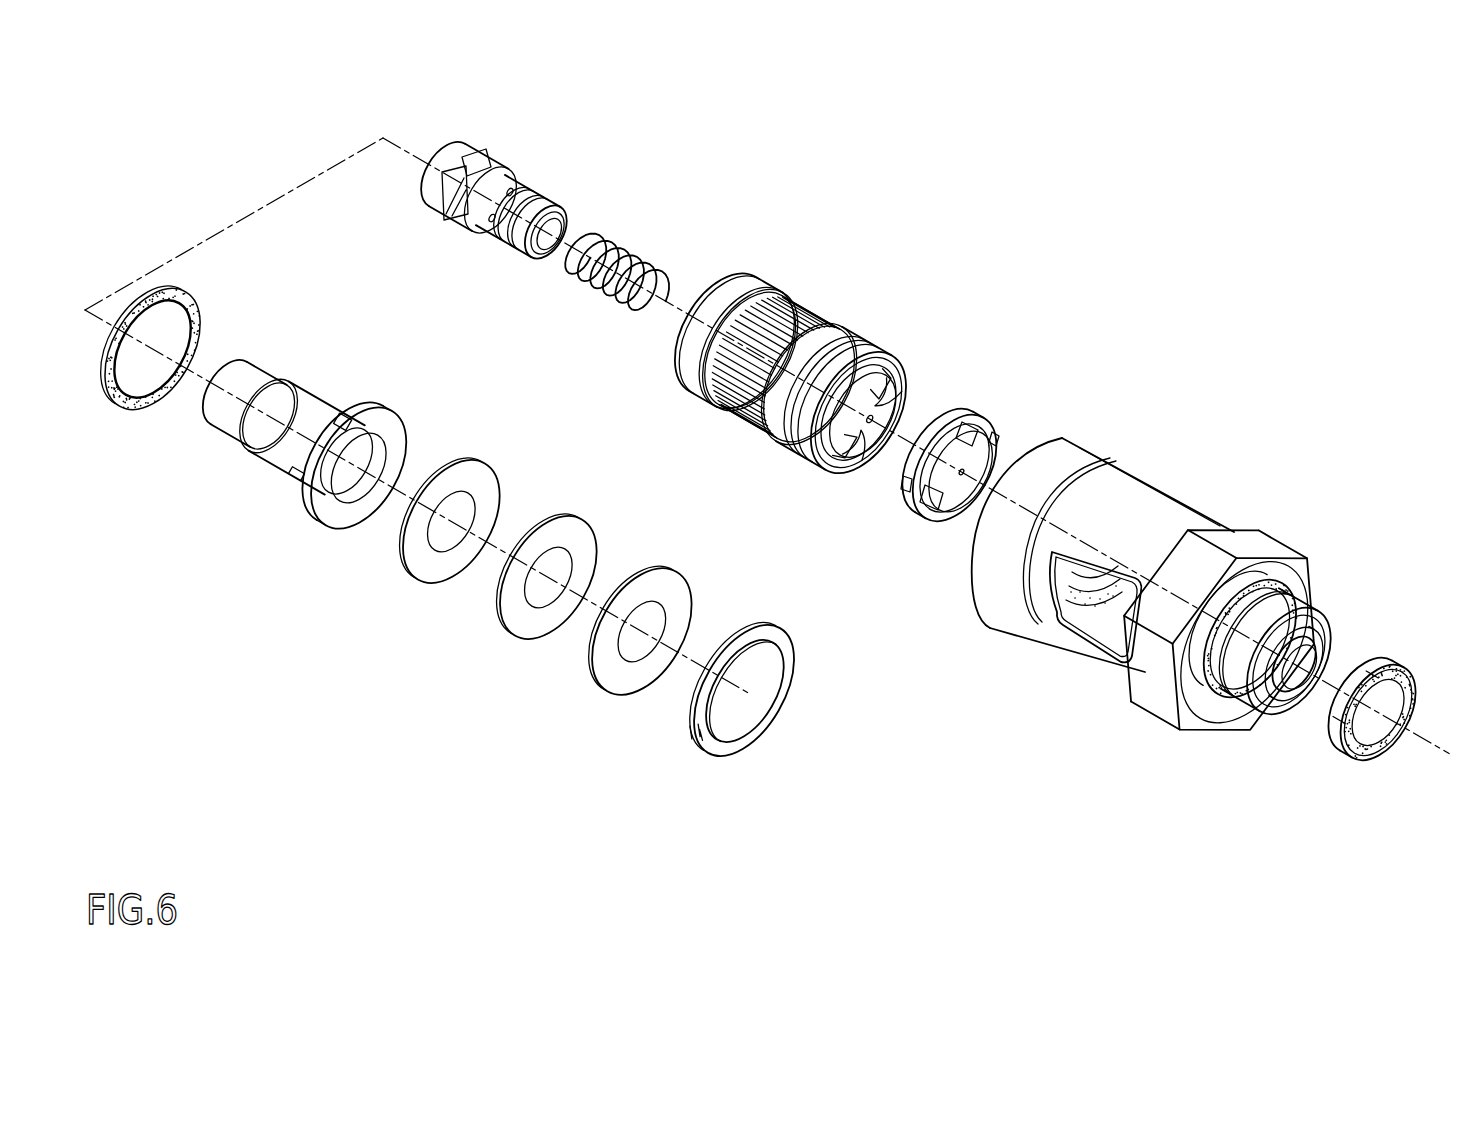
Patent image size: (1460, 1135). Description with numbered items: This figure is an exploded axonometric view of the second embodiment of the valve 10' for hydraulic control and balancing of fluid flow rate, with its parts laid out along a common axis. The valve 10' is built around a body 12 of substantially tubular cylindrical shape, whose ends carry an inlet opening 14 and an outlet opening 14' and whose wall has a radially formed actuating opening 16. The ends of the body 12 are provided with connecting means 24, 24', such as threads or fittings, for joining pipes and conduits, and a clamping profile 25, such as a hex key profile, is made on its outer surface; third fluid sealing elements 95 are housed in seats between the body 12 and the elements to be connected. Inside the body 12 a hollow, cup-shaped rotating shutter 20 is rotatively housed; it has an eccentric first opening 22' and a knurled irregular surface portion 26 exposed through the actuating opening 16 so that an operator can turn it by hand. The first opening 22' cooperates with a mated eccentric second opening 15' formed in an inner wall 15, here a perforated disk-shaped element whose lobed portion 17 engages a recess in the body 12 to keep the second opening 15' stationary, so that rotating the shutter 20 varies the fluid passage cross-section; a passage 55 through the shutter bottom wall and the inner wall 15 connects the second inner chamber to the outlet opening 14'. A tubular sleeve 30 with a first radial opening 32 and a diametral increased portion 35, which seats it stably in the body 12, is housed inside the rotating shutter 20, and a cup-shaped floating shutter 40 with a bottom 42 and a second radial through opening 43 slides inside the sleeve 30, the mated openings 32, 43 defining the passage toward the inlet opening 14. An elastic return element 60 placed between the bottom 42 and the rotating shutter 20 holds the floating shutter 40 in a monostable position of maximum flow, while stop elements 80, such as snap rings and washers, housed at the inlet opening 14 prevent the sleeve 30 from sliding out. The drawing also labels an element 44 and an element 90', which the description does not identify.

The valve for hydraulic control and balancing of fluid flow rate 10' is at (767, 445).
The body 12 is at (1200, 490).
The inlet opening 14 is at (1015, 554).
The outlet opening 14' is at (1294, 716).
The inner wall 15 is at (935, 496).
The second opening 15' is at (973, 469).
The actuating opening 16 is at (1110, 632).
The lobed portion 17 is at (995, 445).
The rotating shutter 20 is at (838, 295).
The first opening 22' is at (865, 415).
The connecting means 24 is at (1150, 456).
The connecting means 24' is at (1300, 632).
The clamping profile 25 is at (1280, 538).
The irregular surface portion 26 is at (728, 385).
The sleeve 30 is at (312, 375).
The first radial opening 32 is at (332, 412).
The diametral increased portion 35 is at (392, 402).
The floating shutter 40 is at (520, 150).
The bottom 42 is at (548, 225).
The second radial through opening 43 is at (478, 150).
The holes of insert 44 is at (516, 189).
The passage 55 is at (938, 435).
The elastic return element 60 is at (660, 245).
The stop elements 80 is at (424, 572).
The O-ring seal 90' is at (150, 369).
The third fluid sealing elements 95 is at (1378, 660).